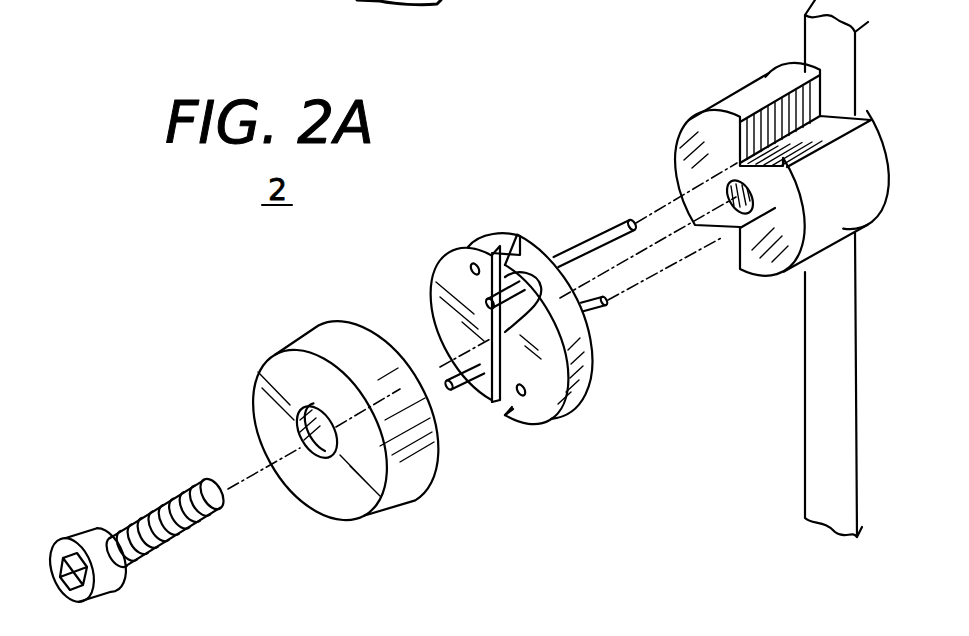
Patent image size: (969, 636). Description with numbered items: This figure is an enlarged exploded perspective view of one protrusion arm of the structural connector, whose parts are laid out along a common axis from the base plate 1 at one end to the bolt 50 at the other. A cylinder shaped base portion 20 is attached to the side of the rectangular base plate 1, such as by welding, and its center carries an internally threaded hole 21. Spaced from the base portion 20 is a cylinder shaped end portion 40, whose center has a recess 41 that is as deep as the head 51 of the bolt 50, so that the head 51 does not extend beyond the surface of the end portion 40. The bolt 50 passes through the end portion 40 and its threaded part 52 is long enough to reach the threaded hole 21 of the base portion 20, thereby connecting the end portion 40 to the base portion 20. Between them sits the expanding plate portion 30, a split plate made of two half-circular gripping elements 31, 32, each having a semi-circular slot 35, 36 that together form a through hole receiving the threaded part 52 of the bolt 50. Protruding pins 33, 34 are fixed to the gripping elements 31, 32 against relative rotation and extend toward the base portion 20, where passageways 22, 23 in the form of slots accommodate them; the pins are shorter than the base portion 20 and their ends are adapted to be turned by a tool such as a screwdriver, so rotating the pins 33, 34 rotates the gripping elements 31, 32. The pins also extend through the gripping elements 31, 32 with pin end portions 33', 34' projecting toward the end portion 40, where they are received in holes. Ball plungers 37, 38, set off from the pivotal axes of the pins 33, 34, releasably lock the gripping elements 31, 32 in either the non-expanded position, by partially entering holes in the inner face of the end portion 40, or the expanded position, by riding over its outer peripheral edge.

The base plate 1 is at (827, 396).
The base portion 20 is at (670, 149).
The internally threaded hole 21 is at (758, 201).
The passageway 22 is at (778, 100).
The passageway 23 is at (730, 238).
The expanding plate portion 30 is at (590, 373).
The gripping element 31 is at (574, 393).
The gripping element 32 is at (460, 248).
The protruding pin 33 is at (645, 203).
The protruding pin end portion 33' is at (495, 200).
The protruding pin 34 is at (652, 313).
The protruding pin end portion 34' is at (403, 326).
The semi-circular slot 35 is at (545, 404).
The semi-circular slot 36 is at (470, 310).
The ball plunger 37 is at (519, 396).
The ball plunger 38 is at (466, 264).
The end portion 40 is at (294, 339).
The recess 41 is at (322, 446).
The bolt 50 is at (158, 552).
The head 51 is at (86, 542).
The threaded part 52 is at (166, 497).